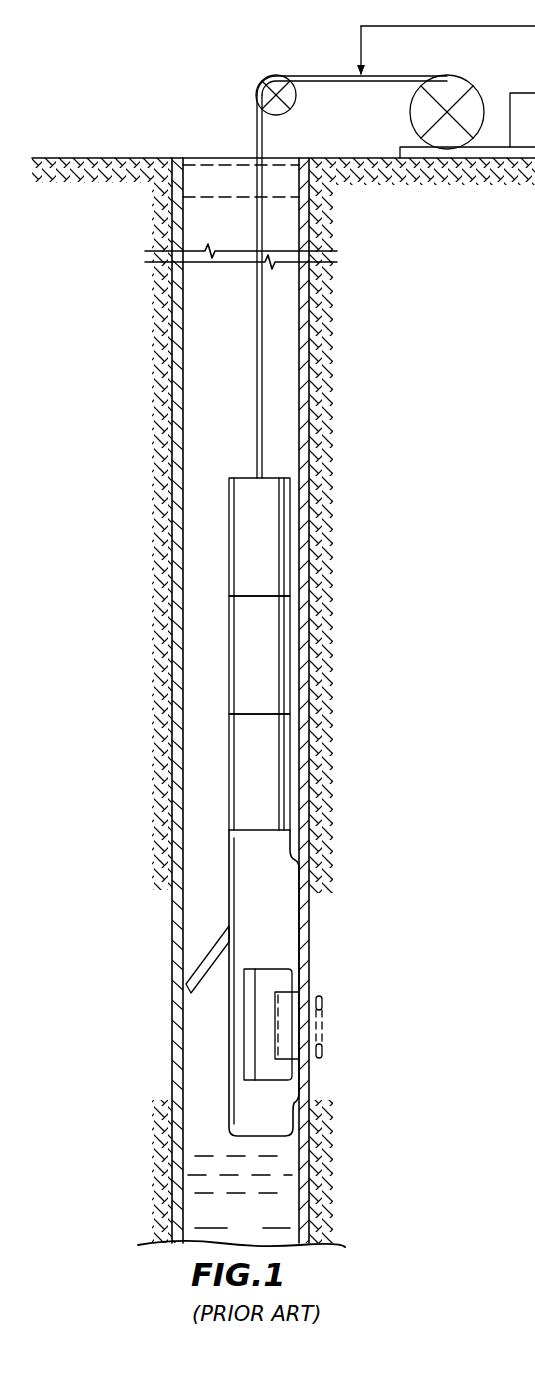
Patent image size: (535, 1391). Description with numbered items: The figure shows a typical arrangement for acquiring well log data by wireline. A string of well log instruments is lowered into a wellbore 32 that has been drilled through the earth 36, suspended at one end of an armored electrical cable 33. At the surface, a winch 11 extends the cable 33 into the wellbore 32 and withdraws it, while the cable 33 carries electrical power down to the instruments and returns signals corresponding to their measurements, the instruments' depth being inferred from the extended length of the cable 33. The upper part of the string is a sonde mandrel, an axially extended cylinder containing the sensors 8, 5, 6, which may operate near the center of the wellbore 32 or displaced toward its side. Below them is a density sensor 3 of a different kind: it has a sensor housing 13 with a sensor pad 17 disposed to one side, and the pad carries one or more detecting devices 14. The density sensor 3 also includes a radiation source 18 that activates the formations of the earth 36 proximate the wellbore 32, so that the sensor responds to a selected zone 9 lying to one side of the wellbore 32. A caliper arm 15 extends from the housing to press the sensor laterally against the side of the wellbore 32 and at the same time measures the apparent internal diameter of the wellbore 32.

The density sensor 3 is at (203, 892).
The sensor 5 is at (242, 640).
The sensor 6 is at (245, 757).
The sensor 8 is at (242, 530).
The selected zone 9 is at (323, 1003).
The winch 11 is at (457, 75).
The sensor housing 13 is at (228, 1095).
The detecting device 14 is at (302, 1092).
The caliper arm 15 is at (203, 960).
The sensor pad 17 is at (243, 1036).
The radiation source 18 is at (293, 1058).
The wellbore 32 is at (198, 167).
The armored electrical cable 33 is at (255, 117).
The earth 36 is at (355, 522).